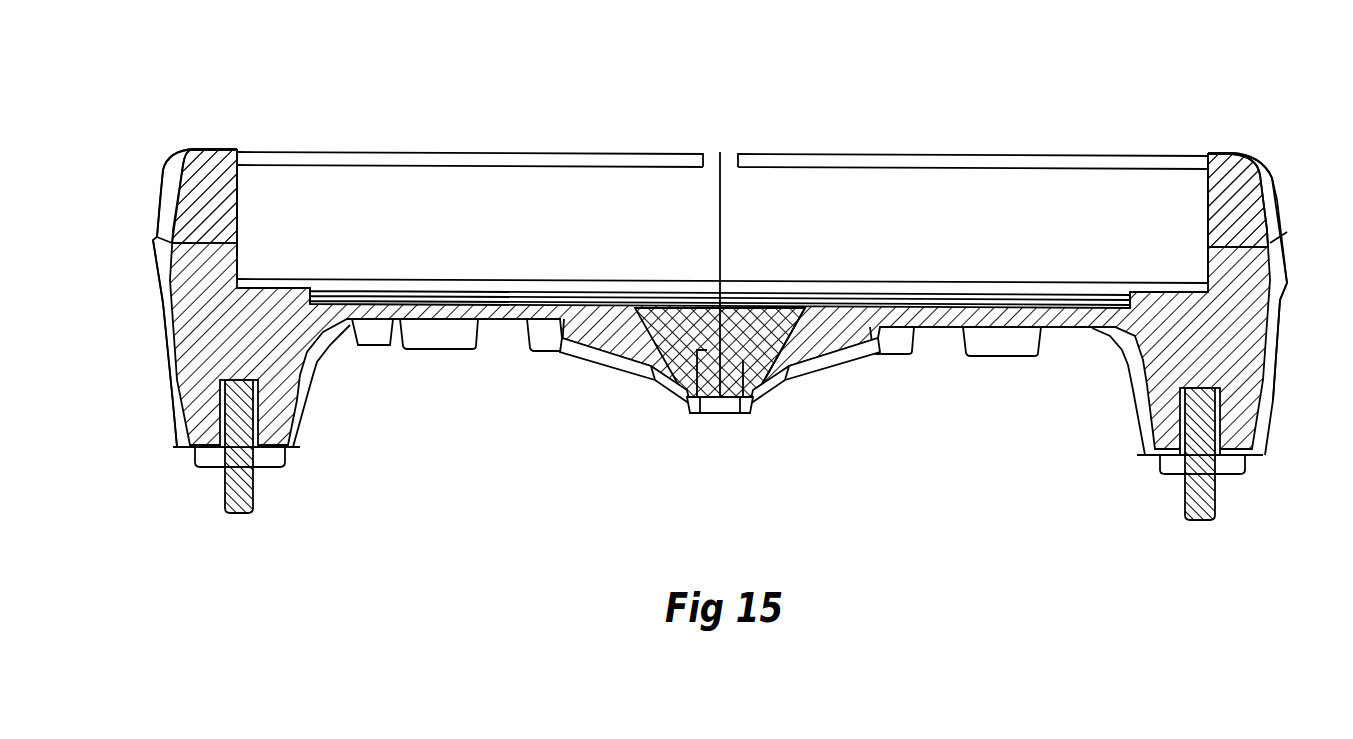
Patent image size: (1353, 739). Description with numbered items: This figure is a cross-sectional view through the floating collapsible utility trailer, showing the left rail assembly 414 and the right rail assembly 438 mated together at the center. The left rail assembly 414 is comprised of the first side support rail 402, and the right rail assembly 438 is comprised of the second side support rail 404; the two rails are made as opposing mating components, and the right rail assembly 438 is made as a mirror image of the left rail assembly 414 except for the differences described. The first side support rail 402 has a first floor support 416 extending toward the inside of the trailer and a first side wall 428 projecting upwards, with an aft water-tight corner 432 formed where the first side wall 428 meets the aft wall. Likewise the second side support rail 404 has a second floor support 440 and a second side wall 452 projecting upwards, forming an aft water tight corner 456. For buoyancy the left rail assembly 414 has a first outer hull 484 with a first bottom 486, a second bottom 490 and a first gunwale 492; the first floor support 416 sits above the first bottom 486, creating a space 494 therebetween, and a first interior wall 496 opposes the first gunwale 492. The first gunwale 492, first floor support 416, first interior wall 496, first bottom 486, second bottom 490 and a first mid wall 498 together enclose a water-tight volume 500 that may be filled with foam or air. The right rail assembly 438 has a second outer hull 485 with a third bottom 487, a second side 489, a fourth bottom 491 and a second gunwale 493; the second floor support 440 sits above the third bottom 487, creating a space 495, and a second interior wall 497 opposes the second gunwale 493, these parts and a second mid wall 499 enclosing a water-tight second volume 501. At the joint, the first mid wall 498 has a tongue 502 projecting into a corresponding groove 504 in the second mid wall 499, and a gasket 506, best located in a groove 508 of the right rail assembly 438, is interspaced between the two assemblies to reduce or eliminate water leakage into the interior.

The first side support rail 402 is at (167, 350).
The second side support rail 404 is at (1280, 330).
The left rail assembly 414 is at (157, 193).
The first floor support 416 is at (520, 279).
The first side wall 428 is at (240, 178).
The aft water-tight corner 432 is at (238, 273).
The right rail assembly 438 is at (1277, 177).
The second floor support 440 is at (910, 287).
The second side wall 452 is at (1208, 213).
The aft water tight corner 456 is at (1205, 283).
The first outer hull 484 is at (157, 278).
The second outer hull 485 is at (173, 397).
The first bottom 486 is at (440, 322).
The third bottom 487 is at (850, 330).
The second side 489 is at (1262, 420).
The second bottom 490 is at (545, 343).
The fourth bottom 491 is at (1008, 342).
The first gunwale 492 is at (190, 147).
The second gunwale 493 is at (1247, 160).
The space 494 is at (372, 322).
The space 495 is at (941, 300).
The first interior wall 496 is at (207, 190).
The second interior wall 497 is at (1213, 162).
The first mid wall 498 is at (760, 333).
The second mid wall 499 is at (645, 330).
The volume 500 is at (612, 203).
The second volume 501 is at (1027, 190).
The tongue 502 is at (708, 412).
The groove 504 is at (662, 392).
The gasket 506 is at (690, 410).
The groove 508 is at (748, 412).